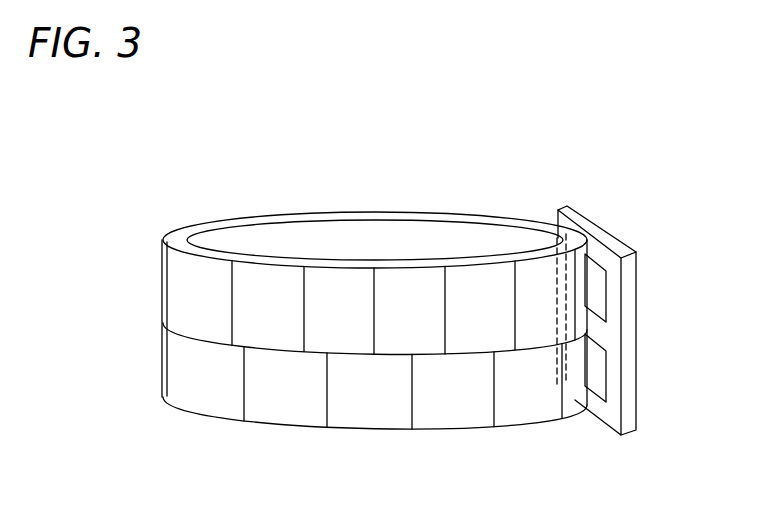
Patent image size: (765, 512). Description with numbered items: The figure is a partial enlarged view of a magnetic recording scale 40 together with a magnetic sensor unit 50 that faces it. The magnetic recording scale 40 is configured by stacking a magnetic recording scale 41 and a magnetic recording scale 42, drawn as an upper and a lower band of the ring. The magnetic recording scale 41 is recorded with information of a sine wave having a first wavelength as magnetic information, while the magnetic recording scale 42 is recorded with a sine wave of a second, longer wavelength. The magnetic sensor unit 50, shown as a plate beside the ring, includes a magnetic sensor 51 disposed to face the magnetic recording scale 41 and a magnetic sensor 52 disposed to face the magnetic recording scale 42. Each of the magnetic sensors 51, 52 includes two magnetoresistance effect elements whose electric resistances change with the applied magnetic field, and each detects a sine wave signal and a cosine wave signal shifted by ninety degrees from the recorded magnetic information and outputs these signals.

The magnetic recording scale 40 is at (322, 286).
The magnetic recording scale 41 is at (156, 289).
The magnetic recording scale 42 is at (156, 356).
The magnetic sensor unit 50 is at (613, 296).
The magnetic sensor 51 is at (607, 300).
The magnetic sensor 52 is at (607, 373).